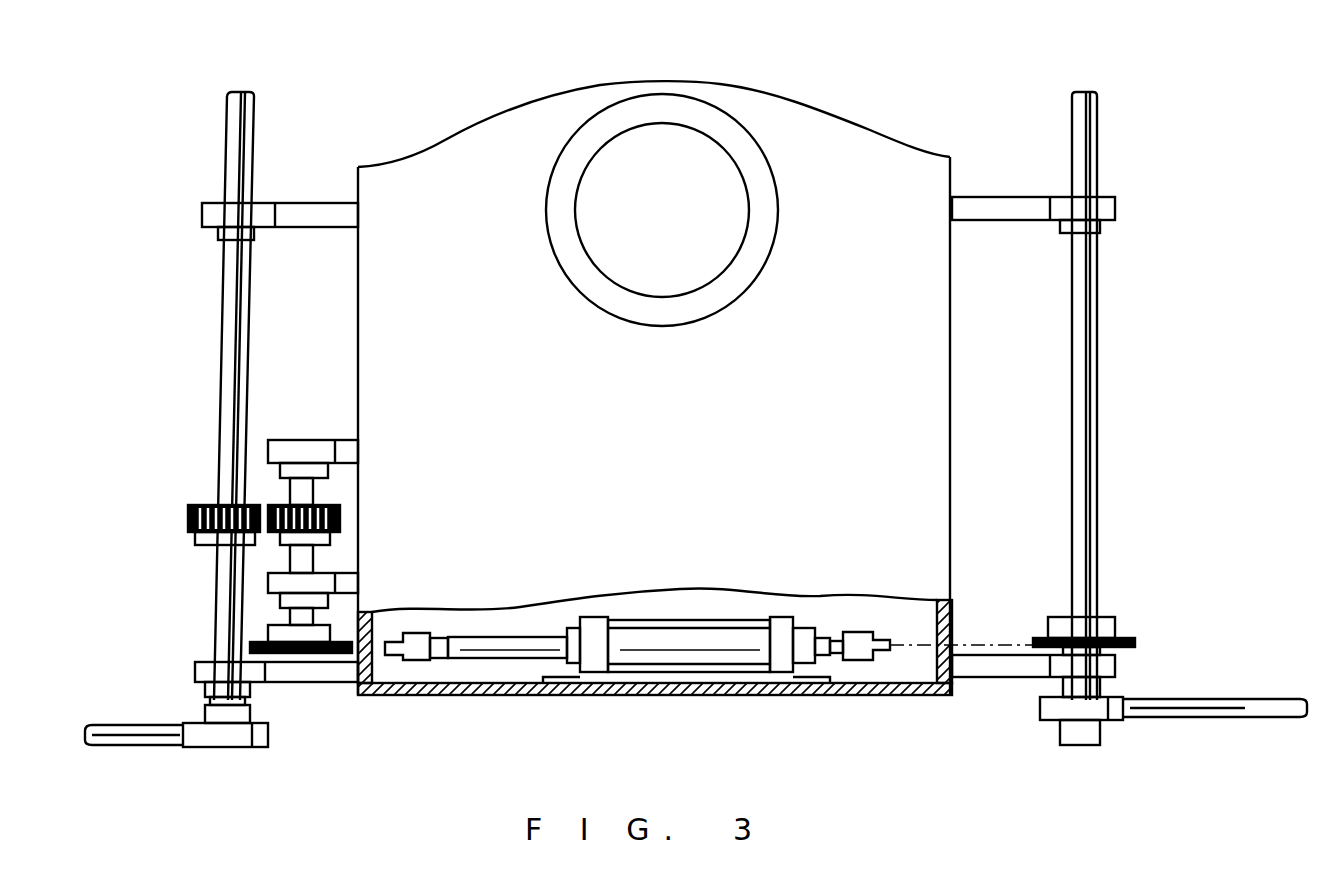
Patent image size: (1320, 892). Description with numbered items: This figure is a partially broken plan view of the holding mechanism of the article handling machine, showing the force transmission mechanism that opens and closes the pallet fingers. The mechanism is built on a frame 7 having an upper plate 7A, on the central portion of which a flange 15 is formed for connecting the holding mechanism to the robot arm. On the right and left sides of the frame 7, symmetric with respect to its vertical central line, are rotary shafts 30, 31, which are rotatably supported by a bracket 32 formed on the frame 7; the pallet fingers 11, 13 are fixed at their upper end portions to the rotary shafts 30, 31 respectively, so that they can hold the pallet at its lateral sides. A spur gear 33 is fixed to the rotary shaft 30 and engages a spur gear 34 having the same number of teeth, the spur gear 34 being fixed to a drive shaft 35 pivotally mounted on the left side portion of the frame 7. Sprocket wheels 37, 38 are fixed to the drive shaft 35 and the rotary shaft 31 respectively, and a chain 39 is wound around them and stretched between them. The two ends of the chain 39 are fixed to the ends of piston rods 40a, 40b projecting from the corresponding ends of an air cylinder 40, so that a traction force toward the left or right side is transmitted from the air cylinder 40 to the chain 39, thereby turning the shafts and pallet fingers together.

The frame 7 is at (493, 697).
The upper plate 7A is at (935, 548).
The pallet finger 11 is at (150, 747).
The pallet finger 13 is at (1197, 720).
The flange 15 is at (768, 224).
The rotary shaft 30 is at (218, 584).
The rotary shaft 31 is at (1087, 536).
The bracket 32 is at (304, 203).
The spur gear 33 is at (190, 508).
The spur gear 34 is at (343, 518).
The drive shaft 35 is at (307, 557).
The sprocket wheel 37 is at (330, 655).
The sprocket wheel 38 is at (1118, 638).
The chain 39 is at (975, 642).
The air cylinder 40 is at (673, 636).
The piston rod 40a is at (497, 650).
The piston rod 40b is at (838, 640).